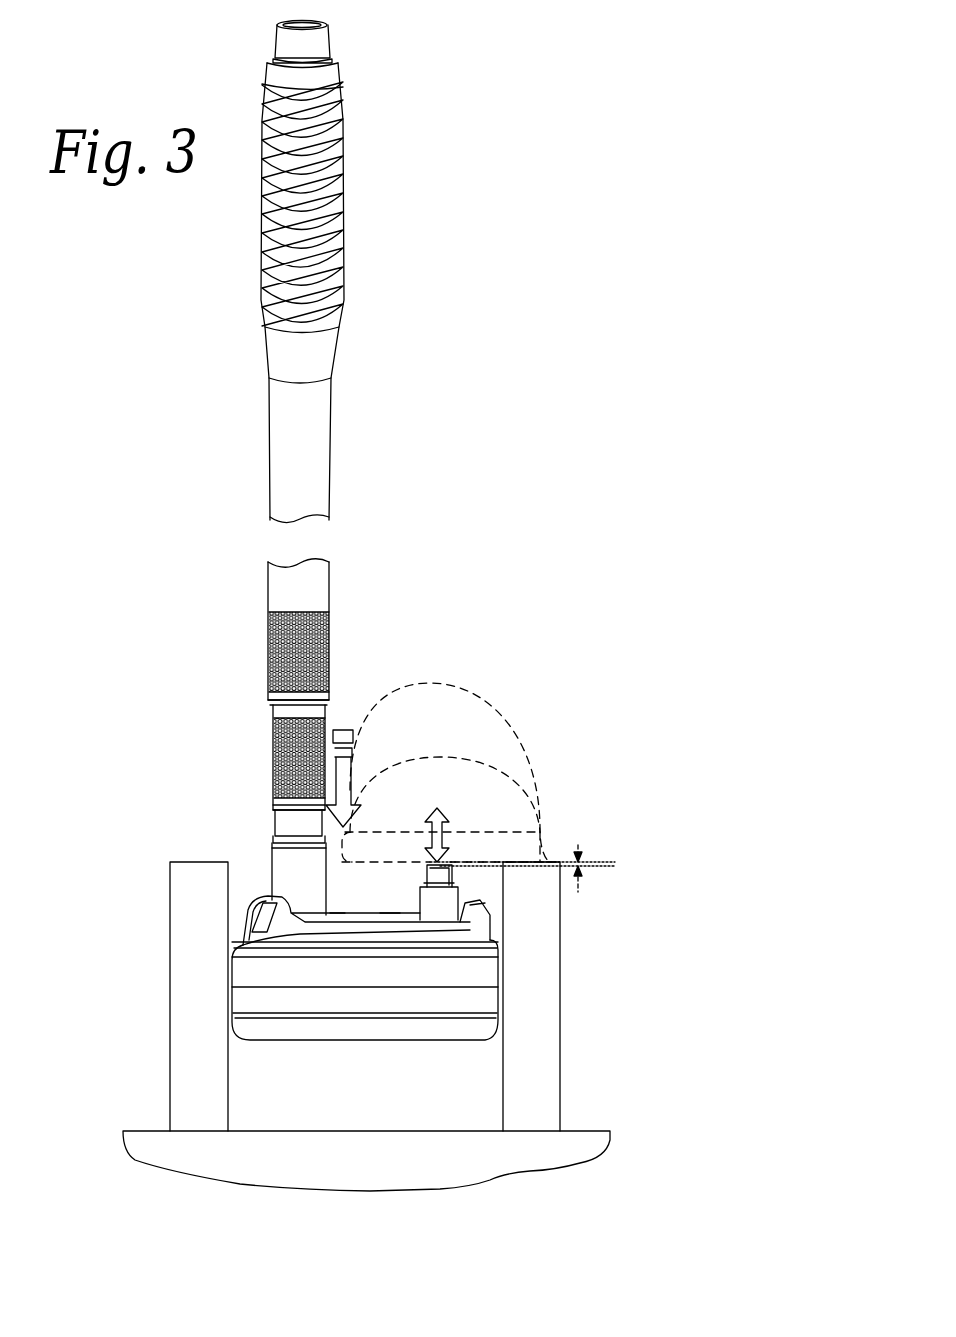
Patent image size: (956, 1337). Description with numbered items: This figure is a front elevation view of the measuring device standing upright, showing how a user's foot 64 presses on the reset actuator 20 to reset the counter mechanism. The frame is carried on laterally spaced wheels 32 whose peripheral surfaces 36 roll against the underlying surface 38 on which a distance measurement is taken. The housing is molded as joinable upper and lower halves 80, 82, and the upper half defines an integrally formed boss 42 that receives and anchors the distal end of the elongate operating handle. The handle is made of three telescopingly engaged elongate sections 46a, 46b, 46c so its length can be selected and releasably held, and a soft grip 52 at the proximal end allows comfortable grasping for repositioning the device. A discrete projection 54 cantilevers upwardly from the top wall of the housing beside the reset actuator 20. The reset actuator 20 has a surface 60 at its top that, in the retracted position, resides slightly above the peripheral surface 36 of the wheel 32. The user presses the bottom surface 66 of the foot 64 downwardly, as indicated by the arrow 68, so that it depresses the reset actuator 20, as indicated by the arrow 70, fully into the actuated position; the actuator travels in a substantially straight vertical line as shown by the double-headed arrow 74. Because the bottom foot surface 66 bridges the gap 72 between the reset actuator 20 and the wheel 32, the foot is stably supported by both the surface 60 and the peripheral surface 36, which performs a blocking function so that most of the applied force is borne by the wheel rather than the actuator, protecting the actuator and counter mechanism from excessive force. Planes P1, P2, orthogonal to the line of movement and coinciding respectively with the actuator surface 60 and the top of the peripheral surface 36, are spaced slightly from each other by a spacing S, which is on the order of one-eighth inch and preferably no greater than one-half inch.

The soft grip 52 is at (292, 80).
The elongate section 46c is at (290, 607).
The elongate section 46b is at (290, 713).
The elongate section 46a is at (290, 815).
The boss 42 is at (285, 876).
The wheels 32 is at (182, 905).
The peripheral surfaces 36 is at (545, 1015).
The underlying surface 38 is at (575, 1128).
The arrow 68 is at (347, 777).
The foot 64 is at (525, 808).
The gap 72 is at (481, 872).
The arrow 74 is at (432, 835).
The surface 60 is at (445, 867).
The projection 54 is at (443, 905).
The reset actuator 20 is at (440, 878).
The bottom surface 66 is at (362, 862).
The arrow 70 is at (396, 881).
The upper housing half 80 is at (316, 984).
The lower housing half 82 is at (316, 1012).
The spacing S is at (577, 851).
The plane P1 is at (582, 866).
The plane P2 is at (582, 863).